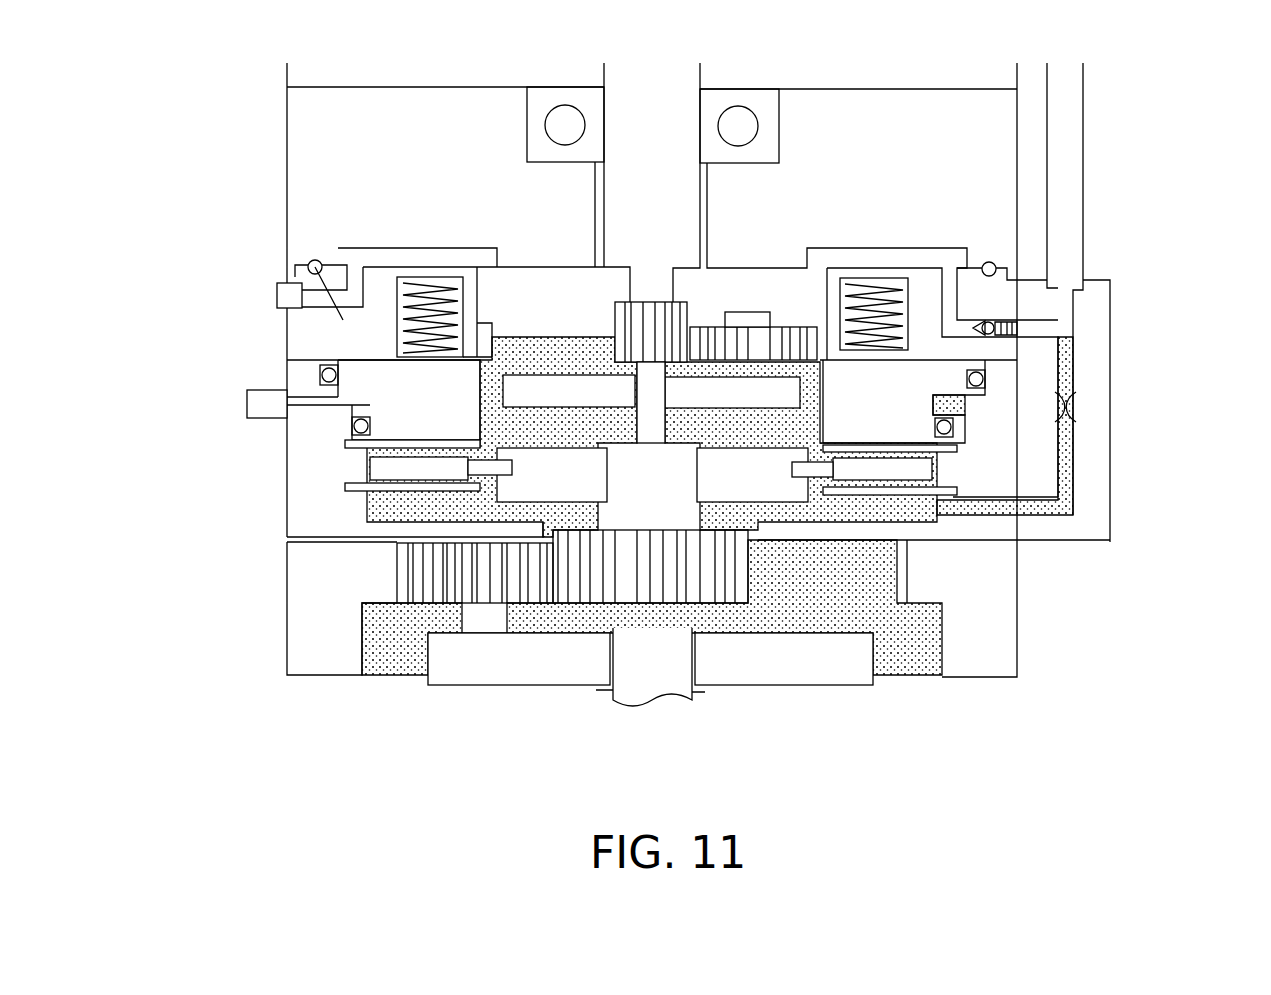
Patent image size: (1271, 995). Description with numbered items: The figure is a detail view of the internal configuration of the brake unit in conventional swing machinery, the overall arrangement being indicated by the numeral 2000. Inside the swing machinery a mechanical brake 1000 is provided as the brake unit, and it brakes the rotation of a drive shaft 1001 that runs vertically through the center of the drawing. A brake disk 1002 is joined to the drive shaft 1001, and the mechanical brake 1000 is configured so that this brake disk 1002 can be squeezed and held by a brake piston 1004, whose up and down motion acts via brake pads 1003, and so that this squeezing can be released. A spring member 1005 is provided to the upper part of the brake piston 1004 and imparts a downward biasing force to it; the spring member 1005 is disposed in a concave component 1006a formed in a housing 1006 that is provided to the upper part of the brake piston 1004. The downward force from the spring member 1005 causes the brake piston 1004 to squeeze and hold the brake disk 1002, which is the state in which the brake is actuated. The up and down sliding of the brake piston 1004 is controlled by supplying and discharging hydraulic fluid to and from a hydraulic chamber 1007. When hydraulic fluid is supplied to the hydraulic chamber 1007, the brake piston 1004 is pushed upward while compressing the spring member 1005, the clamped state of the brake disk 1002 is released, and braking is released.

The pressure control unit 2000 is at (242, 94).
The mechanical brake 1000 is at (232, 474).
The drive shaft 1001 is at (652, 405).
The brake disk 1002 is at (910, 473).
The brake pads 1003 is at (348, 490).
The brake piston 1004 is at (393, 380).
The spring member 1005 is at (397, 328).
The housing 1006 is at (308, 263).
The concave component 1006a is at (397, 297).
The hydraulic chamber 1007 is at (348, 405).